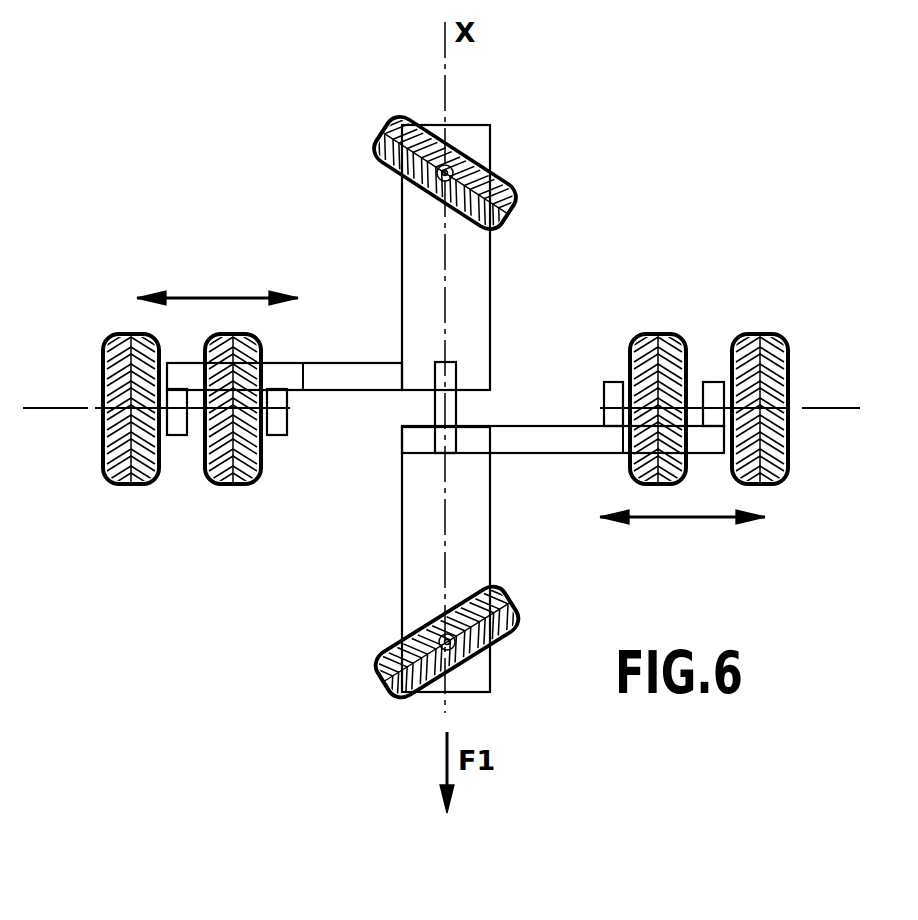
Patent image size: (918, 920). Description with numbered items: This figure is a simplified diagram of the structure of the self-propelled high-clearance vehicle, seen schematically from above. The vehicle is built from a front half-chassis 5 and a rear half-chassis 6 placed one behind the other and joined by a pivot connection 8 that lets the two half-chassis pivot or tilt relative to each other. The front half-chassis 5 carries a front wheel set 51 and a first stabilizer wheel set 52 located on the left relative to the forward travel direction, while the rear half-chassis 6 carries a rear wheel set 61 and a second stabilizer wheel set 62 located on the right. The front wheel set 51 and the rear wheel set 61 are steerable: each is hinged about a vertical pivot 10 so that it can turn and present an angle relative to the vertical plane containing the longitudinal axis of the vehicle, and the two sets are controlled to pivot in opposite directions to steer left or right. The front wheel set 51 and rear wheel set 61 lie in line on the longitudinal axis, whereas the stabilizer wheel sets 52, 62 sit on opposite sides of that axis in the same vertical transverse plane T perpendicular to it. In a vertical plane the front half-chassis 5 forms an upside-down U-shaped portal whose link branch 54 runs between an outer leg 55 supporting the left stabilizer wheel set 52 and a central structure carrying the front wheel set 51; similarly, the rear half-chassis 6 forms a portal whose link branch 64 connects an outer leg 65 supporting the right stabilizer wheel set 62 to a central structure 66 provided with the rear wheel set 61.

The front half-chassis 5 is at (354, 575).
The rear half-chassis 6 is at (312, 248).
The pivot connection 8 is at (475, 407).
The vertical pivot 10 is at (457, 141).
The front wheel set 51 is at (390, 676).
The first stabilizer wheel set 52 is at (662, 338).
The link branch 54 is at (548, 438).
The outer leg 55 is at (613, 388).
The rear wheel set 61 is at (500, 192).
The second stabilizer wheel set 62 is at (223, 473).
The link branch 64 is at (350, 380).
The outer leg 65 is at (278, 424).
The central structure 66 is at (475, 275).
The vertical transverse plane T is at (838, 405).